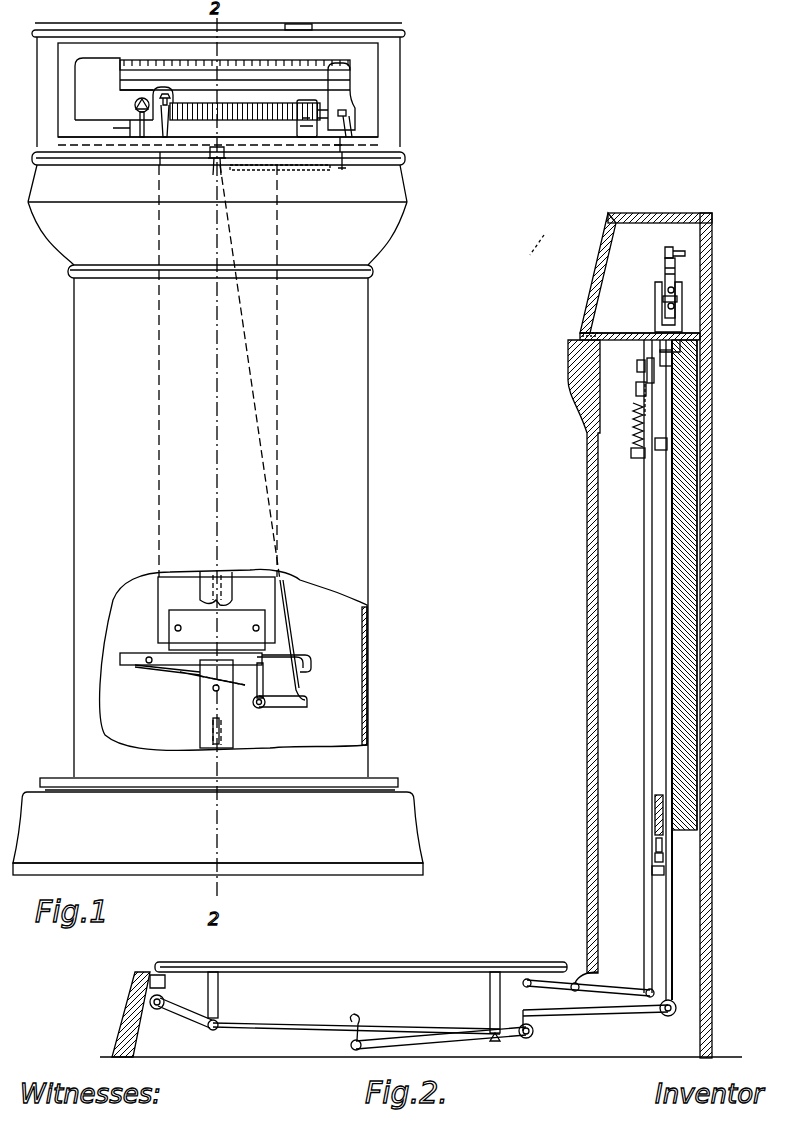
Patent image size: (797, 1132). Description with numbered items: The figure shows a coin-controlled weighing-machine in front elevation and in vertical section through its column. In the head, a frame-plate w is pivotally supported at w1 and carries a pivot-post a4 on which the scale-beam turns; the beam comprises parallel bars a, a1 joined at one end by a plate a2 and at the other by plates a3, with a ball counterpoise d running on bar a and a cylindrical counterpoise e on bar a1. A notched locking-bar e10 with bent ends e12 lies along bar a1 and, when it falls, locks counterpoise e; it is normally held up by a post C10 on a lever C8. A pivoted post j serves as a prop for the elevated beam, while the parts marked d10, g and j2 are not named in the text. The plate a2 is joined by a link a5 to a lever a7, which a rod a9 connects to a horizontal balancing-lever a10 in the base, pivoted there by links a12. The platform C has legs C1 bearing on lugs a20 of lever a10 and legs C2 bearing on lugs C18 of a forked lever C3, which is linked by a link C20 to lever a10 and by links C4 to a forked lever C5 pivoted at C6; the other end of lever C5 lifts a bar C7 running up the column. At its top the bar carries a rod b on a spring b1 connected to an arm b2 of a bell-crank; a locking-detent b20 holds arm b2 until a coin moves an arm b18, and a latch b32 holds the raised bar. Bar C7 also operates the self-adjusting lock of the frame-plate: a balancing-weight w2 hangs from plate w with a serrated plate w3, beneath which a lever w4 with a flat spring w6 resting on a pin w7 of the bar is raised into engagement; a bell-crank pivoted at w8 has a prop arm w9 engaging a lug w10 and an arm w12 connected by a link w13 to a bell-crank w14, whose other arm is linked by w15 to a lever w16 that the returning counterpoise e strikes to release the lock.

In FIG. 2, the scale-beam bar a is at (665, 272).
In FIG. 1, the scale-beam bar a1 is at (234, 112).
In FIG. 2, the scale-beam bar a1 is at (663, 299).
In FIG. 1, the plate a2 is at (212, 89).
In FIG. 2, the plate a2 is at (680, 288).
In FIG. 1, the plates a3 is at (358, 90).
In FIG. 1, the pivot-post a4 is at (172, 113).
In FIG. 2, the pivot-post a4 is at (657, 320).
In FIG. 1, the link a5 is at (136, 113).
In FIG. 2, the lever a7 is at (684, 348).
In FIG. 1, the rod a9 is at (219, 730).
In FIG. 2, the rod a9 is at (673, 908).
In FIG. 2, the balancing-lever a10 is at (640, 1013).
In FIG. 2, the links a12 is at (150, 1002).
In FIG. 2, the lugs a20 is at (205, 1032).
In FIG. 2, the upright rod b is at (636, 458).
In FIG. 2, the spring b1 is at (633, 425).
In FIG. 2, the arm of bell-crank lever b2 is at (636, 392).
In FIG. 2, the arm b18 is at (647, 360).
In FIG. 2, the locking-detent b20 is at (637, 365).
In FIG. 2, the latch b32 is at (675, 360).
In FIG. 1, the platform C is at (386, 778).
In FIG. 2, the platform C is at (287, 962).
In FIG. 2, the legs C1 is at (218, 1000).
In FIG. 2, the legs C2 is at (490, 992).
In FIG. 2, the forked lever C3 is at (410, 1040).
In FIG. 2, the links C4 is at (531, 1036).
In FIG. 2, the forked lever C5 is at (545, 975).
In FIG. 2, the pivot C6 is at (580, 982).
In FIG. 1, the bar C7 is at (200, 722).
In FIG. 2, the bar C7 is at (644, 913).
In FIG. 2, the lever C8 is at (667, 444).
In FIG. 1, the upright post C10 is at (108, 128).
In FIG. 2, the upright post C10 is at (668, 408).
In FIG. 2, the lugs C18 is at (495, 1042).
In FIG. 2, the hook C20 is at (362, 1020).
In FIG. 1, the counterpoise d is at (331, 93).
In FIG. 1, the graduated scale d10 is at (162, 72).
In FIG. 2, the graduated scale d10 is at (665, 253).
In FIG. 1, the counterpoise e is at (300, 106).
In FIG. 2, the locking-bar e10 is at (676, 307).
In FIG. 2, the bent ends of locking-bar e12 is at (676, 296).
In FIG. 1, the lever g is at (346, 140).
In FIG. 1, the upright post j is at (352, 126).
In FIG. 1, the latch pin j2 is at (346, 112).
In FIG. 1, the frame-plate w is at (100, 158).
In FIG. 2, the frame-plate w is at (622, 337).
In FIG. 1, the pivotal support w1 is at (175, 168).
In FIG. 2, the pivotal support w1 is at (580, 335).
In FIG. 1, the balancing-weight w2 is at (158, 608).
In FIG. 2, the balancing-weight w2 is at (690, 427).
In FIG. 1, the serrated plate w3 is at (182, 620).
In FIG. 2, the serrated plate w3 is at (655, 810).
In FIG. 1, the pivoted lever w4 is at (165, 665).
In FIG. 2, the pivoted lever w4 is at (656, 842).
In FIG. 1, the flat spring w6 is at (186, 676).
In FIG. 2, the flat spring w6 is at (655, 860).
In FIG. 1, the pin w7 is at (212, 690).
In FIG. 2, the pin w7 is at (652, 872).
In FIG. 1, the pivot of bell-crank lever w8 is at (262, 700).
In FIG. 1, the prop arm w9 is at (298, 668).
In FIG. 1, the lug w10 is at (264, 667).
In FIG. 1, the arm of bell-crank lever w12 is at (300, 706).
In FIG. 1, the link w13 is at (300, 625).
In FIG. 1, the bell-crank lever w14 is at (222, 165).
In FIG. 1, the link w15 is at (300, 170).
In FIG. 1, the lever w16 is at (344, 168).